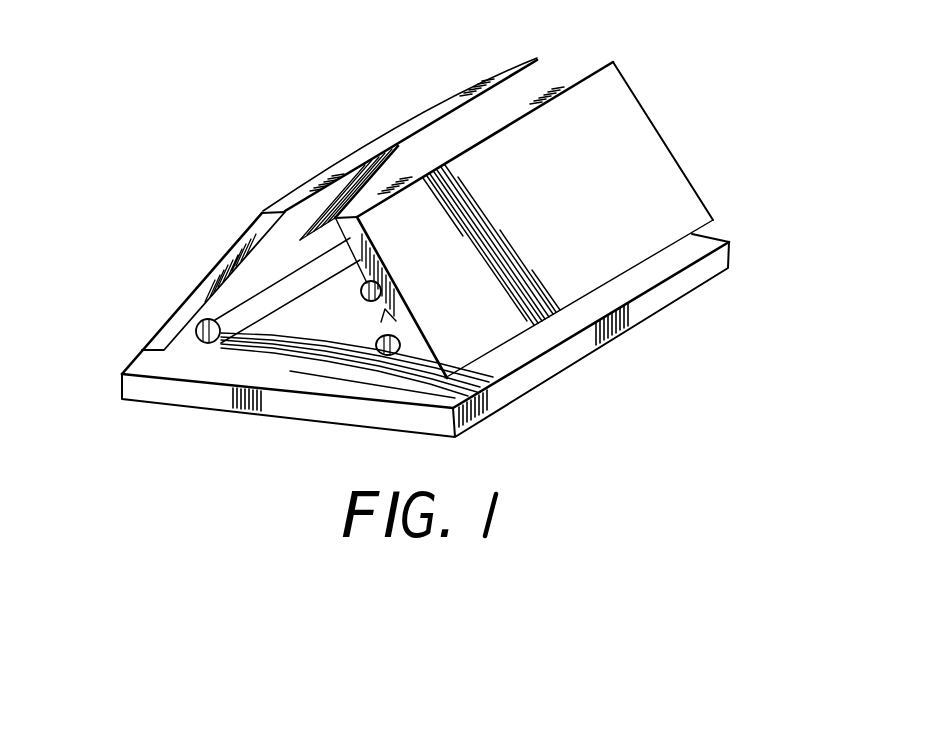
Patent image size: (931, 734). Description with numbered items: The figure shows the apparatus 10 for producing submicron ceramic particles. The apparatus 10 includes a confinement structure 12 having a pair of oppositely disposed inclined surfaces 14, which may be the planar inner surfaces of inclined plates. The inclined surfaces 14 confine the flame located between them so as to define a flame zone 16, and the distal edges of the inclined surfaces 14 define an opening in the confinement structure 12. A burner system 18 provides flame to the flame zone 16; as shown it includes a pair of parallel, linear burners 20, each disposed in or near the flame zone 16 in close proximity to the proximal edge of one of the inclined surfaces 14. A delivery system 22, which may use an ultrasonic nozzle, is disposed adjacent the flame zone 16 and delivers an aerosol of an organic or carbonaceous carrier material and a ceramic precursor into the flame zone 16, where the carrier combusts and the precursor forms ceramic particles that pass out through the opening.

The apparatus 10 is at (765, 96).
The confinement structure 12 is at (150, 284).
The inclined surfaces 14 is at (488, 124).
The flame zone 16 is at (282, 250).
The burner system 18 is at (379, 333).
The burners 20 is at (206, 342).
The delivery system 22 is at (384, 283).